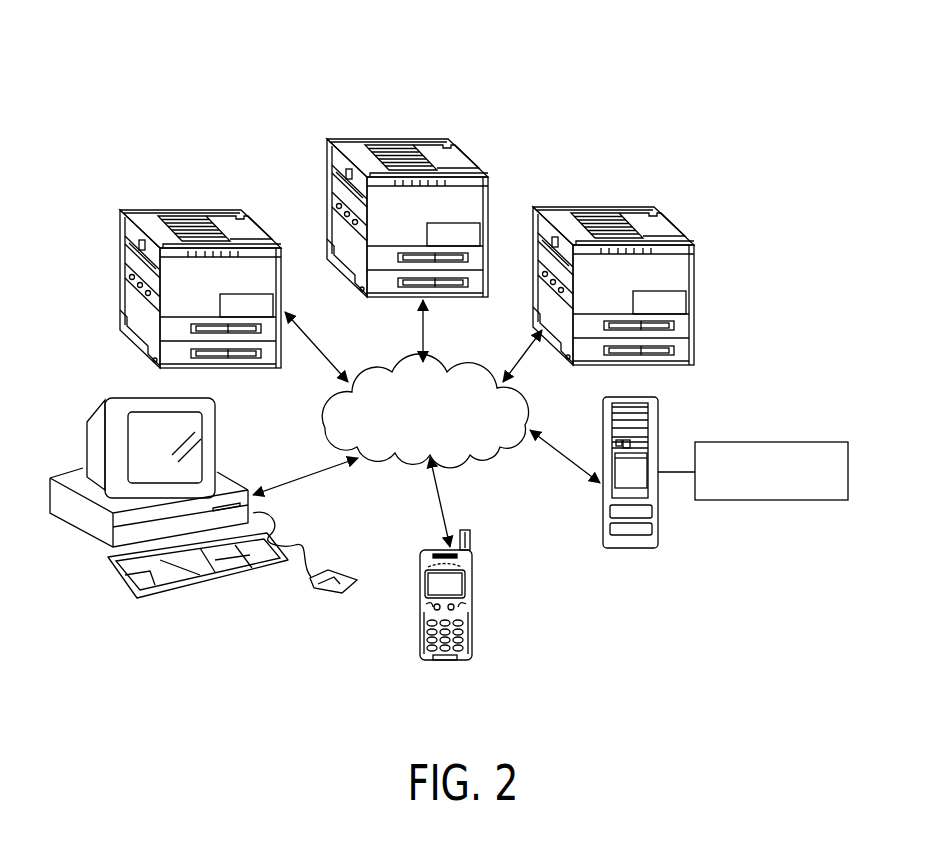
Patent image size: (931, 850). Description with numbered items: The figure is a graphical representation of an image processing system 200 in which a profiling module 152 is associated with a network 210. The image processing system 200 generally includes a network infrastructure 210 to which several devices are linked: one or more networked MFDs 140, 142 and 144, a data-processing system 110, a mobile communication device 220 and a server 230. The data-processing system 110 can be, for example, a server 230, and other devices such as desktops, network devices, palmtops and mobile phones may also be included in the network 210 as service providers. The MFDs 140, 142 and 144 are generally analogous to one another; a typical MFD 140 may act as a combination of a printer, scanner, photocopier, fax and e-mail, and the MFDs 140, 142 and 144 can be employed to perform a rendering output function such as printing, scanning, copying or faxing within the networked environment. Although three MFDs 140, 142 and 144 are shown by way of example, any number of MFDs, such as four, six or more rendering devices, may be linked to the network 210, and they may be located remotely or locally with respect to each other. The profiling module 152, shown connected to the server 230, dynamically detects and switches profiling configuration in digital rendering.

The image processing system 200 is at (598, 88).
The data-processing system 110 is at (217, 443).
The MFD 140 is at (435, 136).
The MFD 142 is at (230, 210).
The MFD 144 is at (680, 233).
The profiling module 152 is at (792, 440).
The network 210 is at (445, 368).
The mobile communication device 220 is at (472, 542).
The server 230 is at (658, 403).